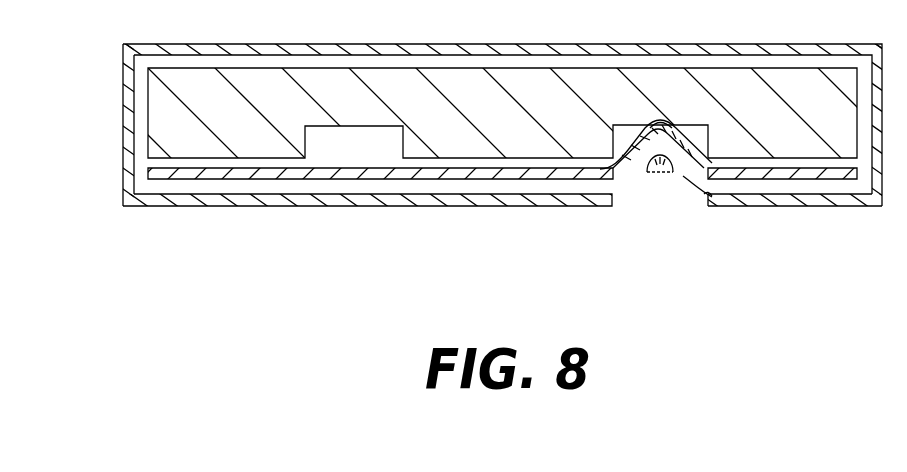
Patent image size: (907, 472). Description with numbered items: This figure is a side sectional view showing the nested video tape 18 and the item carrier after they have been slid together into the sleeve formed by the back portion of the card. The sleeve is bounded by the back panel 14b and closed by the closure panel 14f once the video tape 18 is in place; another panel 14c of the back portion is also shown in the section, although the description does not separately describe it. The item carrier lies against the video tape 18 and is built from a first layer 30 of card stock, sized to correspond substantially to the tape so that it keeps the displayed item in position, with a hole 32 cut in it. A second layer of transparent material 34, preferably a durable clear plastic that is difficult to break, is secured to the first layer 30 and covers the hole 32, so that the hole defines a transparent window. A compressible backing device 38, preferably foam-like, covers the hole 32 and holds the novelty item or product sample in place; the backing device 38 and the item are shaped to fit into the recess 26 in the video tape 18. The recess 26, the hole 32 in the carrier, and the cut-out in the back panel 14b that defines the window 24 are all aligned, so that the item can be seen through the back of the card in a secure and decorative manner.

The closure panel 14f is at (123, 73).
The back panel 14b is at (552, 207).
The bottom wall portion of housing 14c is at (840, 207).
The video tape 18 is at (502, 88).
The recess 26 is at (612, 127).
The backing device 38 is at (675, 140).
The first layer 30 is at (233, 179).
The hole 32 is at (660, 182).
The window 24 is at (635, 197).
The second layer of transparent material 34 is at (710, 197).